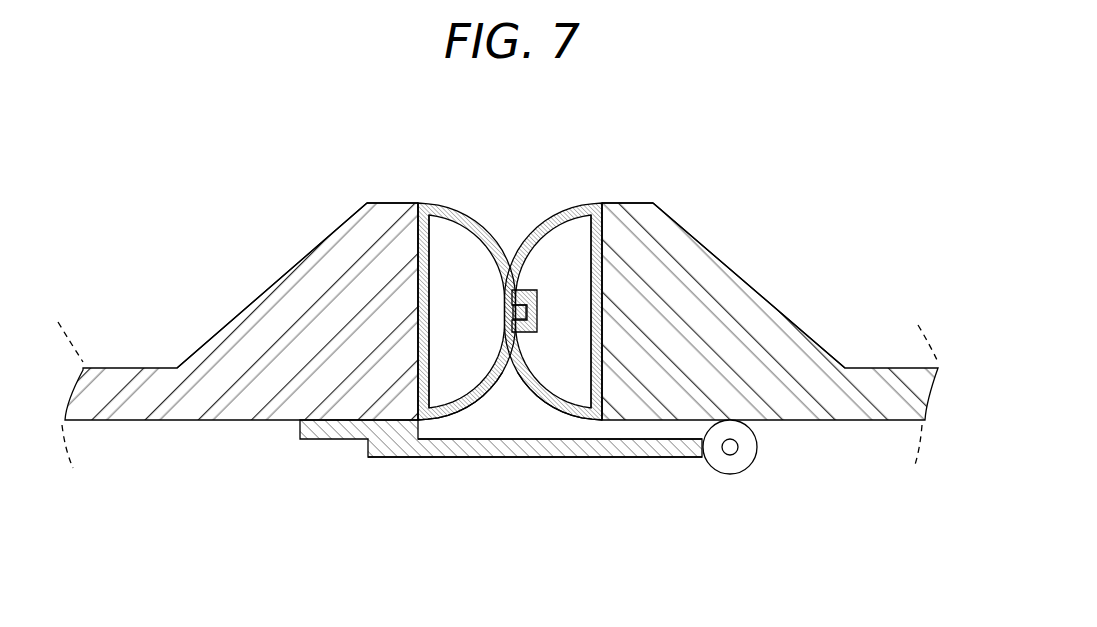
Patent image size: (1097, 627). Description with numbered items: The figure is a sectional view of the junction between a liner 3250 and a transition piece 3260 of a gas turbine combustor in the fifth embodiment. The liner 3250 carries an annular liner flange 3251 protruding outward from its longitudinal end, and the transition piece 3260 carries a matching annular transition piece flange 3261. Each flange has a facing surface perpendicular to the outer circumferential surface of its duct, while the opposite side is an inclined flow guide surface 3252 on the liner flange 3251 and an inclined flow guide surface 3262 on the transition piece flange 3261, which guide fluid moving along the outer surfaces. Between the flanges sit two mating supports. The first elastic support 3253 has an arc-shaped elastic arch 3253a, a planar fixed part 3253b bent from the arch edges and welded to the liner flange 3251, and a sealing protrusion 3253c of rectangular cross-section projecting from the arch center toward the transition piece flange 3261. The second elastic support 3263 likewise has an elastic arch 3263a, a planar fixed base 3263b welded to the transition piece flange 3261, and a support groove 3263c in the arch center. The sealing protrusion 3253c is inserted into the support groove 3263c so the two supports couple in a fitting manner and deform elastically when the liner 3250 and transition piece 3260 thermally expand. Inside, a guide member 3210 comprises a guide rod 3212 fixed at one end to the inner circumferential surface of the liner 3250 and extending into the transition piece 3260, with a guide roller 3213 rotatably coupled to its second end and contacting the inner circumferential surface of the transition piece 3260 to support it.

The guide member 3210 is at (528, 491).
The guide rod 3212 is at (645, 450).
The guide roller 3213 is at (728, 472).
The liner 3250 is at (238, 331).
The liner flange 3251 is at (392, 202).
The flow guide surface 3252 is at (307, 259).
The first elastic support 3253 is at (345, 320).
The elastic arch 3253a is at (466, 404).
The fixed part 3253b is at (420, 322).
The sealing protrusion 3253c is at (518, 311).
The transition piece 3260 is at (770, 331).
The transition piece flange 3261 is at (630, 202).
The flow guide surface 3262 is at (718, 259).
The second elastic support 3263 is at (676, 320).
The elastic arch 3263a is at (555, 402).
The fixed base 3263b is at (600, 322).
The support groove 3263c is at (538, 332).